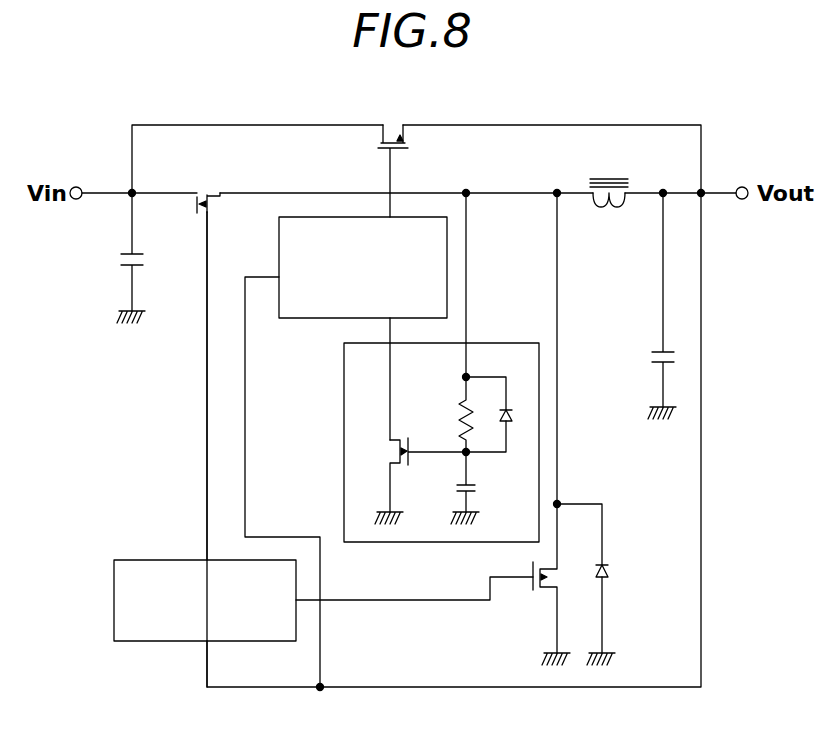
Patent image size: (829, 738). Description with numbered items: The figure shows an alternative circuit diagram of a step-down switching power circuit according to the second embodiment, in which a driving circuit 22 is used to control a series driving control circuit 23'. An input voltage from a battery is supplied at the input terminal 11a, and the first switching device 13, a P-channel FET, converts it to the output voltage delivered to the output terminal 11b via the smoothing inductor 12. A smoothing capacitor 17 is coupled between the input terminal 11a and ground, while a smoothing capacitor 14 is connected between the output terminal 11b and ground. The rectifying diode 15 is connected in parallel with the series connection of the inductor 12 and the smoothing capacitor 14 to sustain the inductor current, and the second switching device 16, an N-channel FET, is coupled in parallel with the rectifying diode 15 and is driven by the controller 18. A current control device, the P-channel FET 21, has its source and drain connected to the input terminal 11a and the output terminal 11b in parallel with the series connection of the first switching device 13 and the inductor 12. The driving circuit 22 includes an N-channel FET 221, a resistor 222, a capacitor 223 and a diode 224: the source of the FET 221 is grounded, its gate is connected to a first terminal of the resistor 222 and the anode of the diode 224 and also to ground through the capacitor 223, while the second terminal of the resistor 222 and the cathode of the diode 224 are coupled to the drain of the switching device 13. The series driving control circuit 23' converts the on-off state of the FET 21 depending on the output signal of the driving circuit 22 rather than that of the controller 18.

The input terminal 11a is at (73, 186).
The output terminal 11b is at (748, 188).
The inductor 12 is at (612, 178).
The first switching device 13 is at (197, 203).
The smoothing capacitor 14 is at (652, 353).
The rectifying diode 15 is at (607, 571).
The second switching device 16 is at (543, 592).
The smoothing capacitor 17 is at (119, 260).
The controller 18 is at (114, 603).
The P-channel FET 21 is at (405, 134).
The driving circuit 22 is at (344, 413).
The series driving control circuit 23' is at (336, 452).
The N-channel FET 221 is at (396, 463).
The resistor 222 is at (466, 402).
The capacitor 223 is at (457, 487).
The diode 224 is at (511, 425).